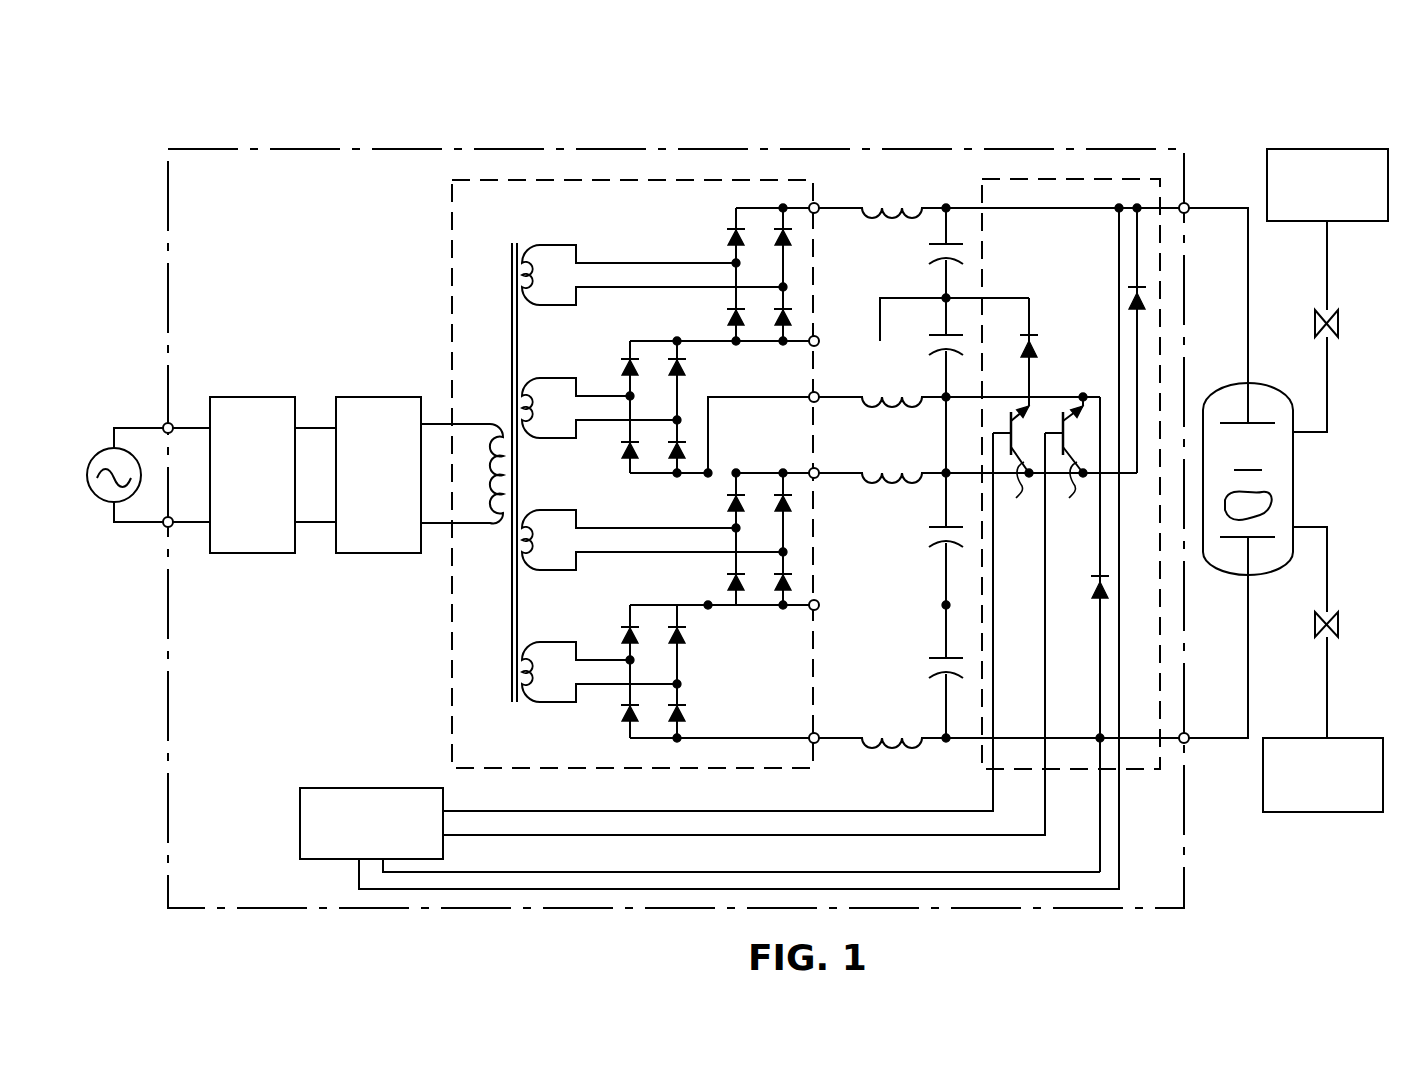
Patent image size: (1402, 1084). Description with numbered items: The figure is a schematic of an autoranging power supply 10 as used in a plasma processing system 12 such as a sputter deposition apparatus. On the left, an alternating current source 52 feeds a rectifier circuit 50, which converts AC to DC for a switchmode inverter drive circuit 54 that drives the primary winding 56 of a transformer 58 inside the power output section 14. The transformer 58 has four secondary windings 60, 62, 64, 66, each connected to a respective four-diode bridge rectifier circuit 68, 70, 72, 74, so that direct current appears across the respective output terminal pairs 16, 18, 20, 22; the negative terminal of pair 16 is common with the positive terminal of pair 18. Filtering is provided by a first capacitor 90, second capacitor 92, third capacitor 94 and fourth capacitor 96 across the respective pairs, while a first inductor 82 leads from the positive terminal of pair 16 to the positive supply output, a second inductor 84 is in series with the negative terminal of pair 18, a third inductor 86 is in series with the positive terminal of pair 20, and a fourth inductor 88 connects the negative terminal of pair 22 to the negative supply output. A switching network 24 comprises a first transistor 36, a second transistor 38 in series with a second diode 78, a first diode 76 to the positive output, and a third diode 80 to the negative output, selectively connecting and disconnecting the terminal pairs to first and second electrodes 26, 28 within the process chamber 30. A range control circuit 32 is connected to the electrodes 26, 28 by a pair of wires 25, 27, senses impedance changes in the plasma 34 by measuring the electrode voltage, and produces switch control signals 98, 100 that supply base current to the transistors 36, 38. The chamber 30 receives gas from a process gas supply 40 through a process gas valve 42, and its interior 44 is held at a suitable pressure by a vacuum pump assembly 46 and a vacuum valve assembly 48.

The autoranging power supply 10 is at (154, 290).
The plasma processing system 12 is at (190, 127).
The power output section 14 is at (450, 263).
The first output terminal pair 16 is at (816, 215).
The second output terminal pair 18 is at (817, 345).
The third output terminal pair 20 is at (816, 480).
The fourth output terminal pair 22 is at (816, 612).
The switching network 24 is at (1073, 770).
The wire 25 is at (359, 880).
The first electrode 26 is at (1261, 420).
The wire 27 is at (517, 872).
The second electrode 28 is at (1272, 540).
The process chamber 30 is at (1294, 462).
The range control circuit 32 is at (330, 788).
The plasma 34 is at (1272, 503).
The first transistor 36 is at (1064, 459).
The second transistor 38 is at (1011, 463).
The process gas supply 40 is at (1323, 814).
The process gas valve 42 is at (1340, 628).
The interior of chamber 44 is at (1248, 455).
The vacuum pump assembly 46 is at (1326, 147).
The vacuum valve assembly 48 is at (1340, 325).
The rectifier circuit 50 is at (254, 396).
The alternating current source 52 is at (102, 446).
The switchmode inverter drive circuit 54 is at (379, 396).
The primary winding 56 is at (488, 418).
The transformer 58 is at (511, 263).
The secondary winding 60 is at (557, 245).
The secondary winding 62 is at (557, 379).
The secondary winding 64 is at (557, 512).
The secondary winding 66 is at (557, 644).
The rectifier circuit 68 is at (736, 209).
The rectifier circuit 70 is at (654, 339).
The rectifier circuit 72 is at (761, 470).
The rectifier circuit 74 is at (680, 661).
The first diode 76 is at (1134, 296).
The second diode 78 is at (1040, 347).
The third diode 80 is at (1097, 585).
The first inductor 82 is at (877, 206).
The second inductor 84 is at (895, 404).
The third inductor 86 is at (910, 492).
The fourth inductor 88 is at (881, 748).
The first capacitor 90 is at (931, 253).
The second capacitor 92 is at (937, 341).
The third capacitor 94 is at (934, 536).
The fourth capacitor 96 is at (934, 669).
The switch control signal 98 is at (618, 838).
The switch control signal 100 is at (532, 810).